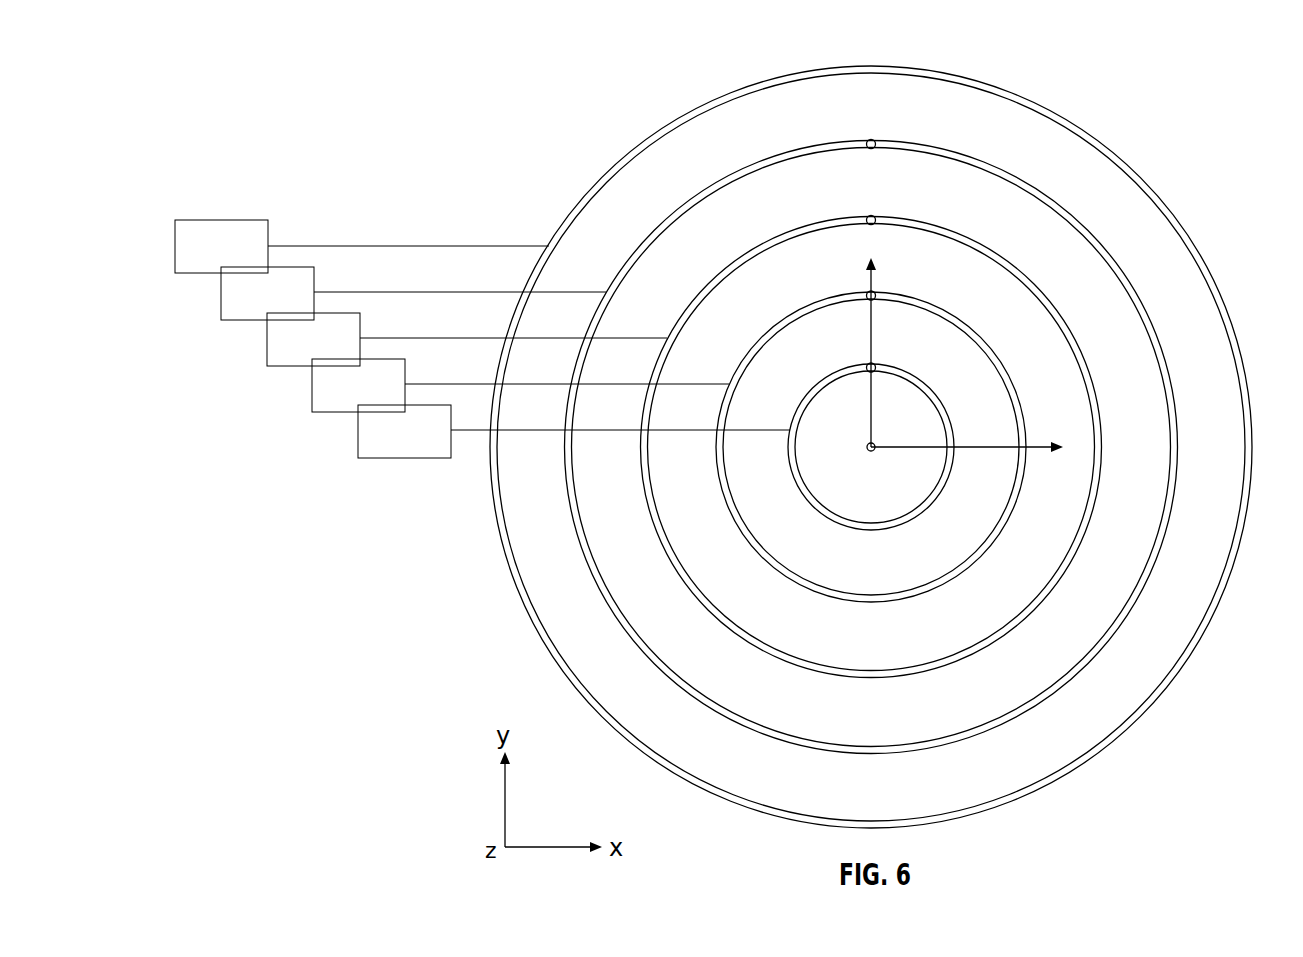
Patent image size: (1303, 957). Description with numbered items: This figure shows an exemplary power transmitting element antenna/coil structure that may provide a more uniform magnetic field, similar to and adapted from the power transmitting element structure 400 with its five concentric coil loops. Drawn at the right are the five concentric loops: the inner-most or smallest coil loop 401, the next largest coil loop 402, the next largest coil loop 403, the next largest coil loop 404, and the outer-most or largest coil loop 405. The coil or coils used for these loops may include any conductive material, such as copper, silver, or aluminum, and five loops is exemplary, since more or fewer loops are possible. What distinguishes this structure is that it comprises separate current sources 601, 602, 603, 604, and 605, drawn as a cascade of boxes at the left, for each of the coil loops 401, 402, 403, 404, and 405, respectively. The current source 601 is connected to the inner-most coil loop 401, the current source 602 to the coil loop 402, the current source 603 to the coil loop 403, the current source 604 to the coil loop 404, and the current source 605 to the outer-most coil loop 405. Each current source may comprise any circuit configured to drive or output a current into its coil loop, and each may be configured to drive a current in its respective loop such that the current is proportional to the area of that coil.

The power transmitting element structure 400 is at (448, 73).
The inner-most coil loop 401 is at (920, 377).
The coil loop 402 is at (979, 331).
The coil loop 403 is at (1033, 278).
The coil loop 404 is at (1082, 223).
The outer-most coil loop 405 is at (1136, 168).
The current source 601 is at (362, 442).
The current source 602 is at (310, 390).
The current source 603 is at (268, 343).
The current source 604 is at (223, 297).
The current source 605 is at (217, 213).